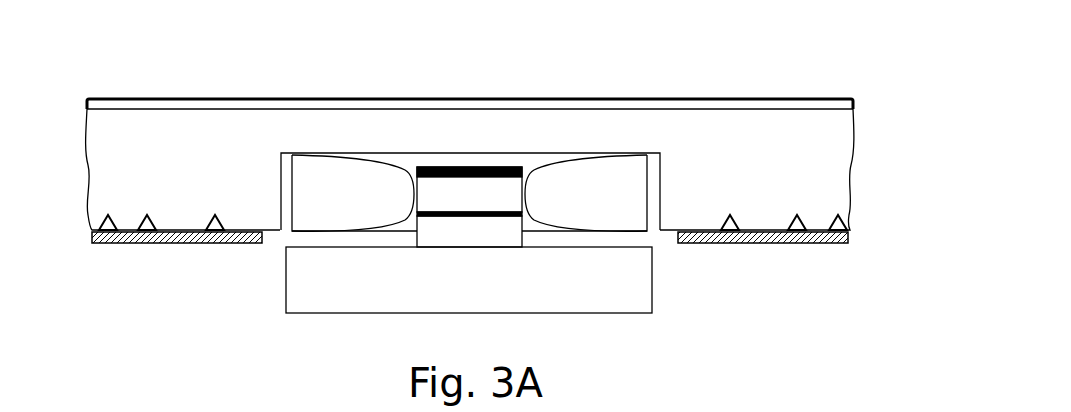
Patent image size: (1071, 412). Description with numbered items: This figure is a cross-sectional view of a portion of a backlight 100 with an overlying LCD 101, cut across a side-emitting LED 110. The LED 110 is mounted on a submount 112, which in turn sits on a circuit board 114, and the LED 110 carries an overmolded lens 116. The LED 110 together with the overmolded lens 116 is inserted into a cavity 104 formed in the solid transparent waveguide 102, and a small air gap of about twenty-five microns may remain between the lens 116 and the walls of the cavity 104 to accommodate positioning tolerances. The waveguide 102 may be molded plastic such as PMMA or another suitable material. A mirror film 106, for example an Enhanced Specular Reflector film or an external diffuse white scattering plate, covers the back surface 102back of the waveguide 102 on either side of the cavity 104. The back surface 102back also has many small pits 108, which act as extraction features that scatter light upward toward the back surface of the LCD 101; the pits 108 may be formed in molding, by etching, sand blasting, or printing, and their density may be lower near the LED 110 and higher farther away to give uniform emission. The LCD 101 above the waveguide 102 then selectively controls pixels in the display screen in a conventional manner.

The backlight 100 is at (820, 72).
The LCD 101 is at (622, 98).
The waveguide 102 is at (855, 158).
The back surface of the waveguide 102back is at (250, 230).
The cavity 104 is at (661, 237).
The mirror film 106 is at (800, 243).
The pits 108 is at (797, 215).
The side-emitting LED 110 is at (469, 191).
The submount 112 is at (469, 231).
The circuit board 114 is at (469, 280).
The overmolded lens 116 is at (293, 210).